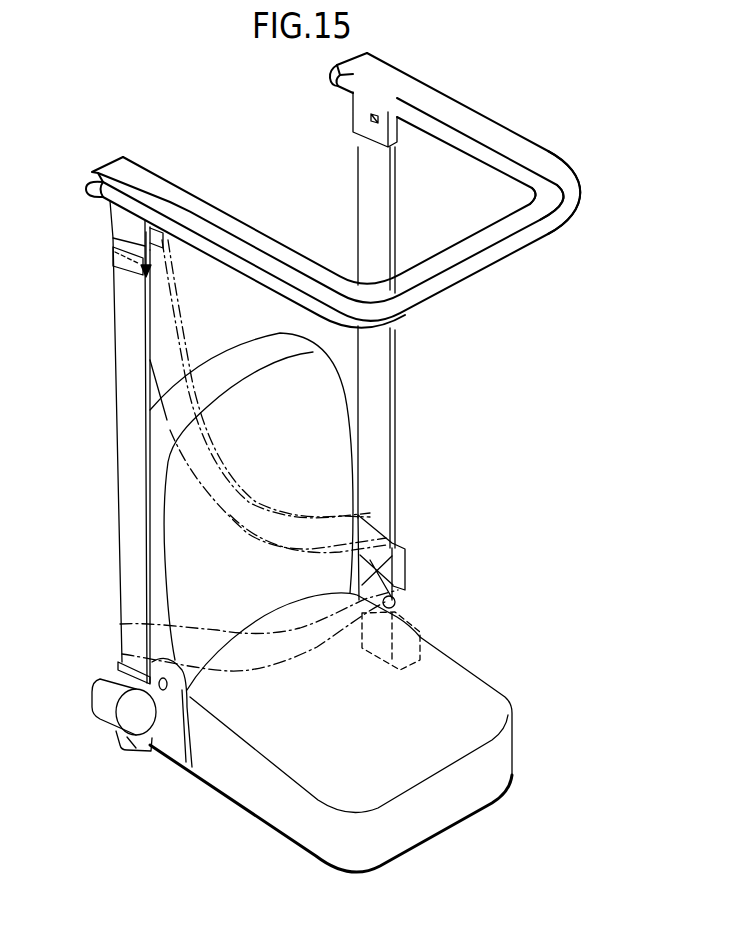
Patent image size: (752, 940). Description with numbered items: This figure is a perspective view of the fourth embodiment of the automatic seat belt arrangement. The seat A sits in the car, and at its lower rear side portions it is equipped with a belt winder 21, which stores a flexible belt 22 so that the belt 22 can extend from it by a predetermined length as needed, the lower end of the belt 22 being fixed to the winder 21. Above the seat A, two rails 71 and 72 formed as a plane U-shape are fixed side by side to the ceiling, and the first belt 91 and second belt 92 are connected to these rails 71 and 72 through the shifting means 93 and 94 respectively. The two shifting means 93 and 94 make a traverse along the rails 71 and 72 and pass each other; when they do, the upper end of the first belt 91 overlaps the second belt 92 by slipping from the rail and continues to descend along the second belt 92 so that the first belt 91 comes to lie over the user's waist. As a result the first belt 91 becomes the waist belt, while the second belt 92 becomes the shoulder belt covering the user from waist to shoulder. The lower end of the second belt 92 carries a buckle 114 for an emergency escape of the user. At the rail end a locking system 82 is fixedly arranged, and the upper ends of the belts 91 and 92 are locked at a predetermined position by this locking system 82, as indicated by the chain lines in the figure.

The rail 71 is at (490, 120).
The rail 72 is at (550, 197).
The shifting means 94 is at (355, 112).
The shifting means 93 is at (117, 222).
The locking system 82 is at (162, 230).
The first belt 91 is at (125, 444).
The second belt 92 is at (383, 452).
The buckle 114 is at (403, 563).
The belt 22 is at (395, 602).
The belt winder 21 is at (423, 643).
The seat A is at (472, 830).